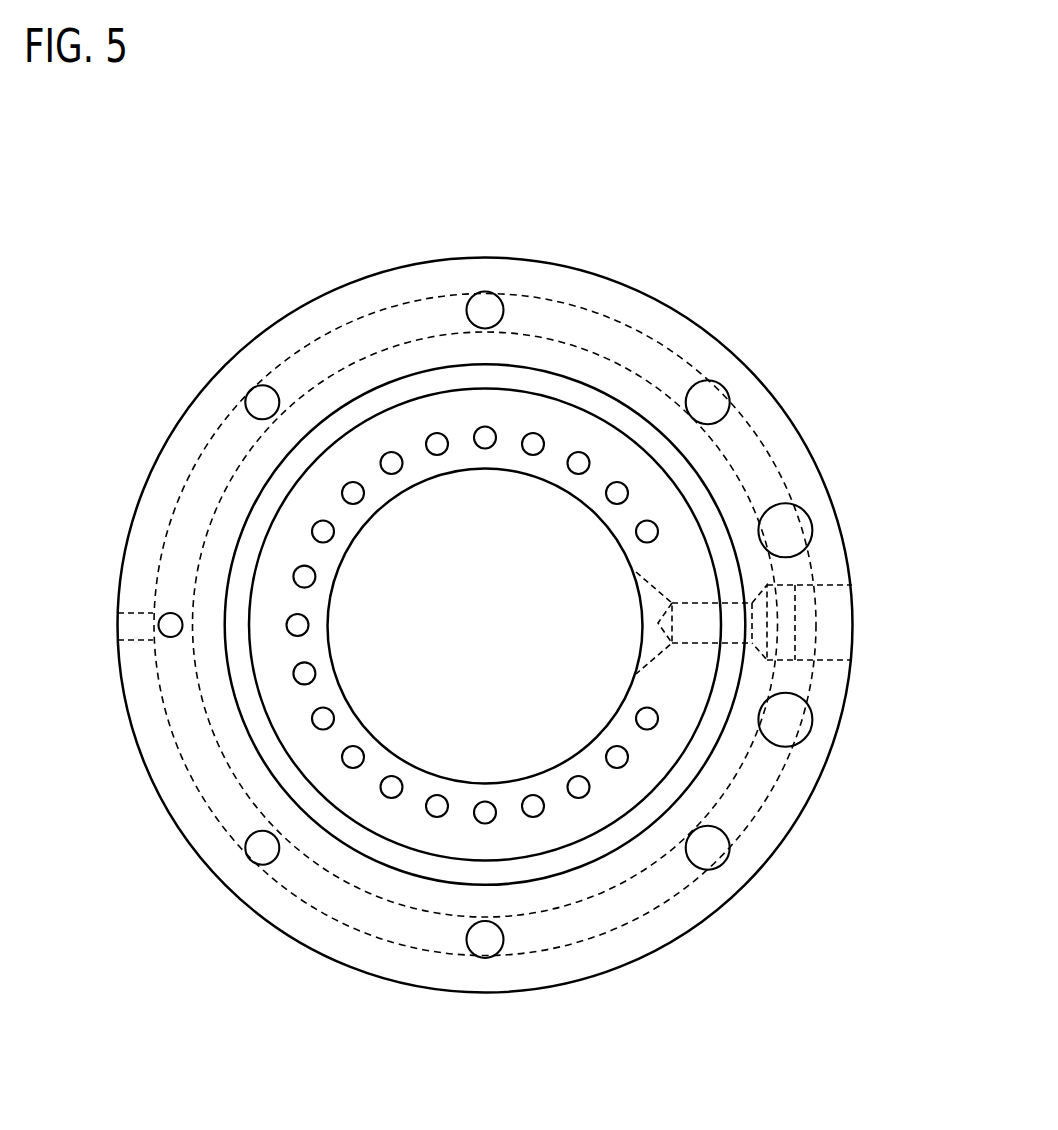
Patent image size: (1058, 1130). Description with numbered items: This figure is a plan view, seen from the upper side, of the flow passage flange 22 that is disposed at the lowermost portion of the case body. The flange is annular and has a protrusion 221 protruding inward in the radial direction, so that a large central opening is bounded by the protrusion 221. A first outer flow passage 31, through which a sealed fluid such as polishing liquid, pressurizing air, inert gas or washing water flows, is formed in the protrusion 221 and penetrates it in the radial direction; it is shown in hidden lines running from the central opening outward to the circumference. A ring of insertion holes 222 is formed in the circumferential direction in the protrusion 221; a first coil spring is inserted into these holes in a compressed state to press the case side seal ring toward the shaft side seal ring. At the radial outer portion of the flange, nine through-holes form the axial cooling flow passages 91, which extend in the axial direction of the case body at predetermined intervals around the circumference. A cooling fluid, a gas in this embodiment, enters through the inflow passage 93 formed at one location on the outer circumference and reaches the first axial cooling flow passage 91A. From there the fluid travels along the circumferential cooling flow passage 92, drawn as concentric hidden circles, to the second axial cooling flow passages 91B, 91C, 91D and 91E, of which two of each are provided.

The flow passage flange 22 is at (677, 313).
The protrusion 221 is at (318, 603).
The insertion holes 222 is at (479, 430).
The first outer flow passage 31 is at (826, 591).
The axial cooling flow passage 91 is at (482, 626).
The first axial cooling flow passage 91A is at (165, 617).
The second axial cooling flow passage 91B is at (200, 927).
The second axial cooling flow passage 91C is at (485, 1047).
The second axial cooling flow passage 91D is at (762, 935).
The second axial cooling flow passage 91E is at (795, 729).
The circumferential cooling flow passage 92 is at (566, 302).
The inflow passage 93 is at (134, 640).